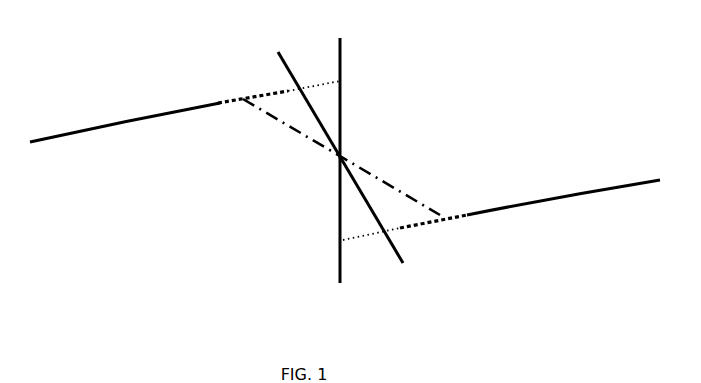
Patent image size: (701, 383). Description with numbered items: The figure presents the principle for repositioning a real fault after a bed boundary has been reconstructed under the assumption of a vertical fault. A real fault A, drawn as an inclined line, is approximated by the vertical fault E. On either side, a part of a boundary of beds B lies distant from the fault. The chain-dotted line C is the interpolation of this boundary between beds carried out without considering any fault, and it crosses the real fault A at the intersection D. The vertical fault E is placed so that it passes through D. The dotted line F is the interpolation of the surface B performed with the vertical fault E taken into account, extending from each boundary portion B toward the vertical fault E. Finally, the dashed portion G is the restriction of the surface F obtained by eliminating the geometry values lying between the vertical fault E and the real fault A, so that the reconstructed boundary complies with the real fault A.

The real fault A is at (329, 145).
The part of a boundary of beds B is at (345, 161).
The interpolation of the boundary between beds C is at (341, 157).
The intersection D is at (331, 173).
The vertical fault E is at (352, 155).
The dotted interpolation of the surface F is at (344, 160).
The restriction of the surface G is at (342, 160).